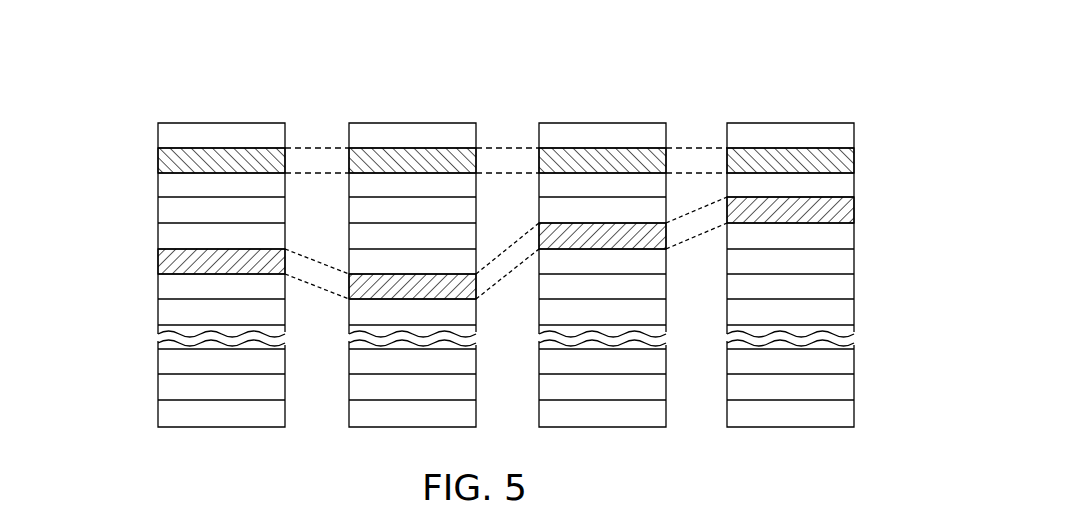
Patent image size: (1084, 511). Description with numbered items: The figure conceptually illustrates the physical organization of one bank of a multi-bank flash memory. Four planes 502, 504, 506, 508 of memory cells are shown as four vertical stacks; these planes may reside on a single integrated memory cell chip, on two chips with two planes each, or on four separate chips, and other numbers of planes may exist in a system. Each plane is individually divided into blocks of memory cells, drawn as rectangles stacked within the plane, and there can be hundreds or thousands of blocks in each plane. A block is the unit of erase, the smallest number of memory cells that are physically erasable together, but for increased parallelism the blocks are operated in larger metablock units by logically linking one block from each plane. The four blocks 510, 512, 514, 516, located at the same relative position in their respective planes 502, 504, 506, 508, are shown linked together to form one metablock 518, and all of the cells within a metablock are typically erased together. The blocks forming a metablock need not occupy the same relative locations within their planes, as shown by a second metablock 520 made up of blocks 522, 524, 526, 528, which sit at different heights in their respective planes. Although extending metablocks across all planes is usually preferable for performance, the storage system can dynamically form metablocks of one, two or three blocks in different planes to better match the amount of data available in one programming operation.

The plane 502 is at (218, 115).
The plane 504 is at (412, 115).
The plane 506 is at (602, 115).
The plane 508 is at (803, 112).
The block 510 is at (188, 157).
The block 512 is at (390, 162).
The block 514 is at (582, 162).
The block 516 is at (822, 160).
The metablock 518 is at (702, 155).
The second metablock 520 is at (697, 222).
The block 522 is at (178, 262).
The block 524 is at (382, 284).
The block 526 is at (587, 235).
The block 528 is at (827, 207).